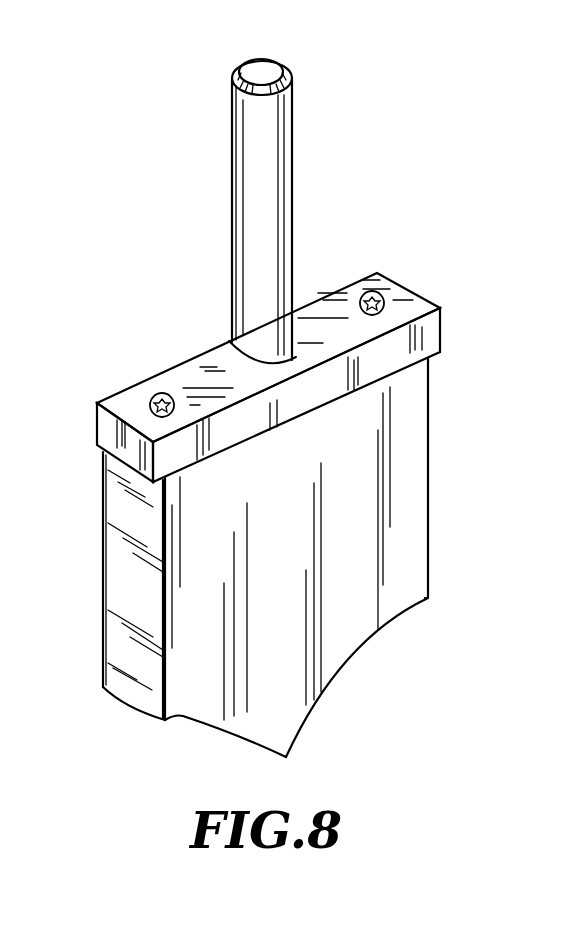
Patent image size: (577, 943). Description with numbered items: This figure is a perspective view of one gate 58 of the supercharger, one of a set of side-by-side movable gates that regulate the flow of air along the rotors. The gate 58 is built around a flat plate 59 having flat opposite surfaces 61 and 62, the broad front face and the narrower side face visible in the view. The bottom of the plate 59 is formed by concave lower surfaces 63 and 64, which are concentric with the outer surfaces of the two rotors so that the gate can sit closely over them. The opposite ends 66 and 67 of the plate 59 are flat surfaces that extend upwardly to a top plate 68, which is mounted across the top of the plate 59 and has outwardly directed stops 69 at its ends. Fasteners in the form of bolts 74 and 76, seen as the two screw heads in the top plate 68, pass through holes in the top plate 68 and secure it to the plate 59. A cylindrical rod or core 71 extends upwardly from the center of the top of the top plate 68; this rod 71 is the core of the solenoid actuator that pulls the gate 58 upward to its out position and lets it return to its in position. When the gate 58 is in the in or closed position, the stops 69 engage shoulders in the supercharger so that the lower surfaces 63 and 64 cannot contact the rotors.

The gate 58 is at (421, 198).
The flat plate 59 is at (267, 359).
The flat surface 61 is at (101, 586).
The flat surface 62 is at (326, 570).
The concave lower surface 63 is at (205, 723).
The concave lower surface 64 is at (354, 660).
The end 66 is at (128, 657).
The end 67 is at (428, 537).
The top plate 68 is at (110, 432).
The stop 69 is at (440, 352).
The rod 71 is at (277, 142).
The bolt 74 is at (151, 396).
The bolt 76 is at (365, 292).